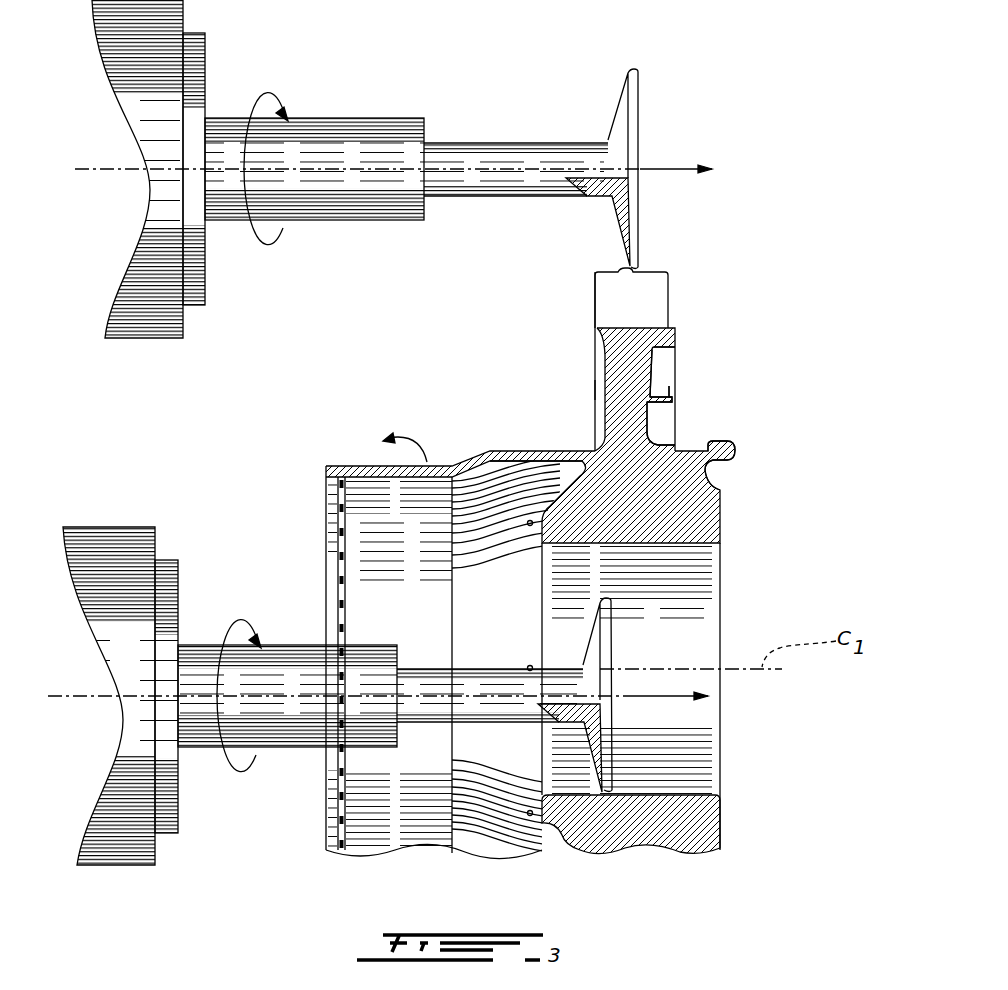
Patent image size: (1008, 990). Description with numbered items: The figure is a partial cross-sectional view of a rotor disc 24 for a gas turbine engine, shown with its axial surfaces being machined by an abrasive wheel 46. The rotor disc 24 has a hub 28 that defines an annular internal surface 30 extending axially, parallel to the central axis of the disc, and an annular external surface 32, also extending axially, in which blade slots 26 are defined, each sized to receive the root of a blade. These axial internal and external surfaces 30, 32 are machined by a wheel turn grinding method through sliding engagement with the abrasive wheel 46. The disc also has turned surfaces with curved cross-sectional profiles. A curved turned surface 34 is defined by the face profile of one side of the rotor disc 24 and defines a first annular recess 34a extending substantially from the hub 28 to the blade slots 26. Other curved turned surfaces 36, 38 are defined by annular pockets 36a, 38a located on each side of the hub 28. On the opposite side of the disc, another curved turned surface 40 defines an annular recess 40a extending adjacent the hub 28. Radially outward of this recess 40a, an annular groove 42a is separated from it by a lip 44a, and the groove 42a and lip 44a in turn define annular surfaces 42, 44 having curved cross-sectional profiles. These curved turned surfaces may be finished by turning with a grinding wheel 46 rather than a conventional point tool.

The rotor disc 24 is at (777, 796).
The blade slots 26 is at (643, 325).
The hub 28 is at (704, 508).
The annular internal surface 30 is at (668, 543).
The annular external surface 32 is at (658, 267).
The curved turned surface 34 is at (603, 367).
The first annular recess 34a is at (598, 390).
The curved turned surface 36 is at (583, 470).
The annular pocket 36a is at (565, 487).
The curved turned surface 38 is at (716, 480).
The annular pocket 38a is at (722, 468).
The curved turned surface 40 is at (676, 428).
The annular recess 40a is at (670, 413).
The annular surface 42 is at (655, 386).
The annular groove 42a is at (658, 364).
The annular surface 44 is at (668, 402).
The lip 44a is at (670, 394).
The abrasive wheel 46 is at (629, 71).